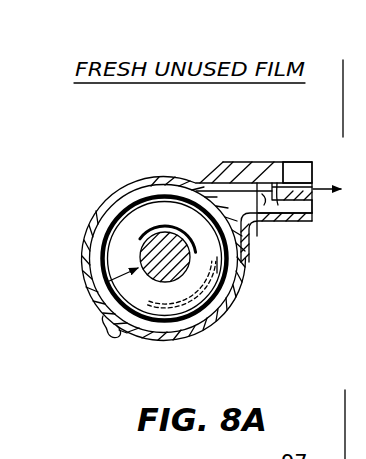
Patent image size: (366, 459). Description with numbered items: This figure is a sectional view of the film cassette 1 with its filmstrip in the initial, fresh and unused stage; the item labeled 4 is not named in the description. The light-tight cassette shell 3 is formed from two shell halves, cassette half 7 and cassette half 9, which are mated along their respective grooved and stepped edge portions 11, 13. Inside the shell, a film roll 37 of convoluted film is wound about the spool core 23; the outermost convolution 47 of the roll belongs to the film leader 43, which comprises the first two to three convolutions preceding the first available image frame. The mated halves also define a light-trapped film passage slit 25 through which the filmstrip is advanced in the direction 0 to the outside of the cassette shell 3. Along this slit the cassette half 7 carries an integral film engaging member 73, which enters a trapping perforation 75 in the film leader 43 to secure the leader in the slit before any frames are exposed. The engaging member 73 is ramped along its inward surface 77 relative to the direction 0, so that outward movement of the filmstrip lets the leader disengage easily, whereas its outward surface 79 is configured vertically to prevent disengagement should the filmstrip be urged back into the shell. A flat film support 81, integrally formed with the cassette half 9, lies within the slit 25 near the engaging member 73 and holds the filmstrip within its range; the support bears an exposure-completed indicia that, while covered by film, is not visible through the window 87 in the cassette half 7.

The film cassette 1 is at (104, 180).
The cassette half 7 is at (140, 173).
The cassette shell 3 is at (94, 316).
The cassette half 9 is at (216, 331).
The spool core 23 is at (92, 303).
The grooved and stepped edge portion 11 is at (120, 337).
The grooved and stepped edge portion 13 is at (127, 334).
The film leader 43 is at (190, 180).
The inward surface 77 is at (233, 178).
The film engaging member 73 is at (250, 185).
The window 87 is at (293, 170).
The film passage slit 25 is at (313, 185).
The film 4 is at (313, 187).
The direction 0 is at (336, 191).
The film support 81 is at (311, 208).
The trapping perforation 75 is at (257, 236).
The outward surface 79 is at (278, 205).
The film roll 37 is at (244, 287).
The outermost convolution 47 is at (232, 308).